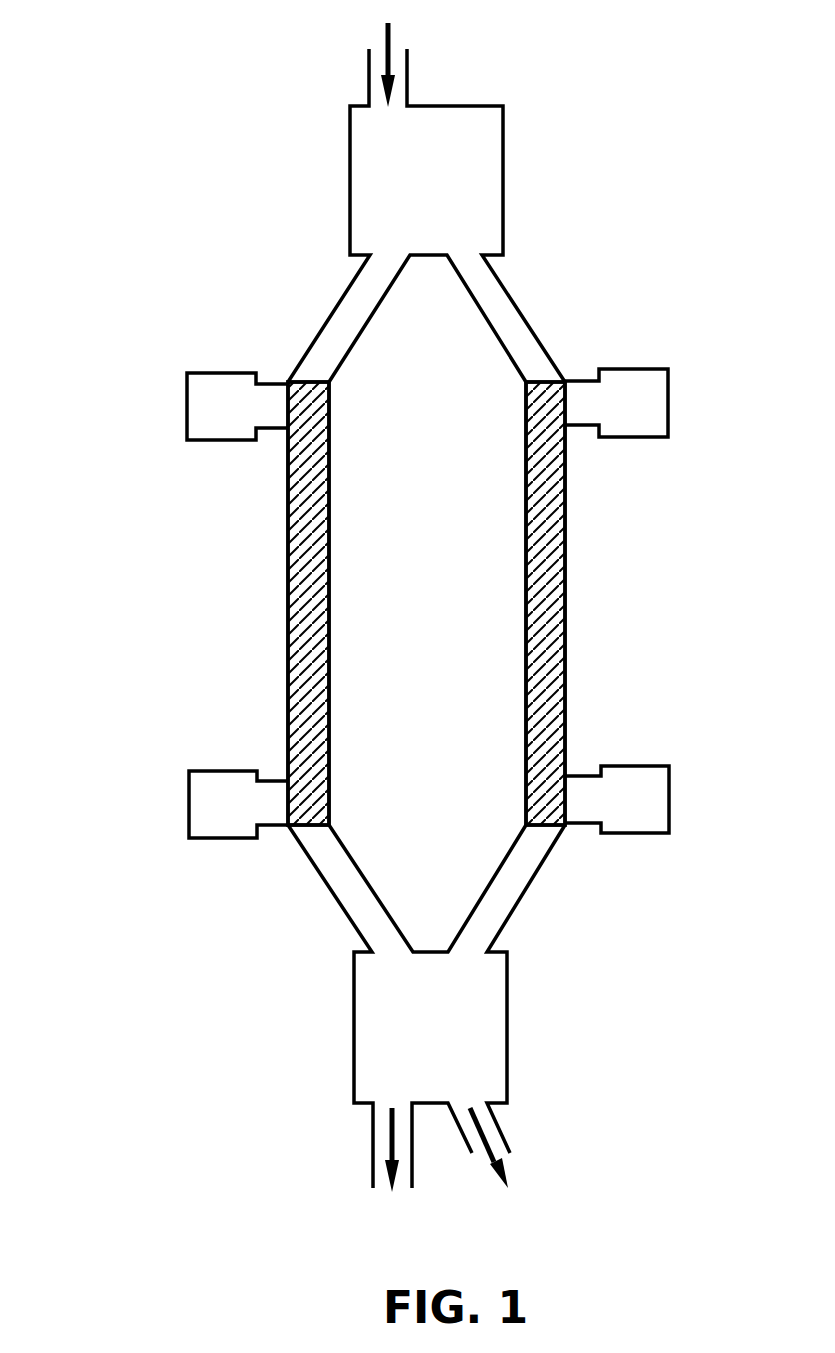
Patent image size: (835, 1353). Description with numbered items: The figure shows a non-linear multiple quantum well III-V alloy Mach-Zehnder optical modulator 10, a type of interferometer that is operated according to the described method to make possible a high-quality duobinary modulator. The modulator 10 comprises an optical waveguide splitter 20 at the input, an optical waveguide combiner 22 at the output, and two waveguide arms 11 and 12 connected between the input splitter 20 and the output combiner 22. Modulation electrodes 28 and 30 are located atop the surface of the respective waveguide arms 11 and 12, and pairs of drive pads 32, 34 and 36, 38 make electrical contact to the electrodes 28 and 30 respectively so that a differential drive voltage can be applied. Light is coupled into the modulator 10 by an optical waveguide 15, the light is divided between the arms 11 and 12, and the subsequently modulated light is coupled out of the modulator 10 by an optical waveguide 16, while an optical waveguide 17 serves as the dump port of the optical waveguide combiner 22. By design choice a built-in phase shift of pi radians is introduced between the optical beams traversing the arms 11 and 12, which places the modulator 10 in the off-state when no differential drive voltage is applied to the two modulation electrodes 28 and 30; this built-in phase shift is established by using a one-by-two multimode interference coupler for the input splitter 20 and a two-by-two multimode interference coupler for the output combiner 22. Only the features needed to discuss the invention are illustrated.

The modulator 10 is at (183, 74).
The waveguide arm 11 is at (567, 635).
The waveguide arm 12 is at (288, 633).
The optical waveguide 15 is at (385, 60).
The optical waveguide 16 is at (388, 1137).
The optical waveguide 17 is at (482, 1127).
The optical waveguide splitter 20 is at (277, 108).
The optical waveguide combiner 22 is at (280, 830).
The modulation electrode 28 is at (567, 575).
The modulation electrode 30 is at (288, 587).
The drive pad 32 is at (658, 397).
The drive pad 34 is at (662, 807).
The drive pad 36 is at (197, 407).
The drive pad 38 is at (197, 806).